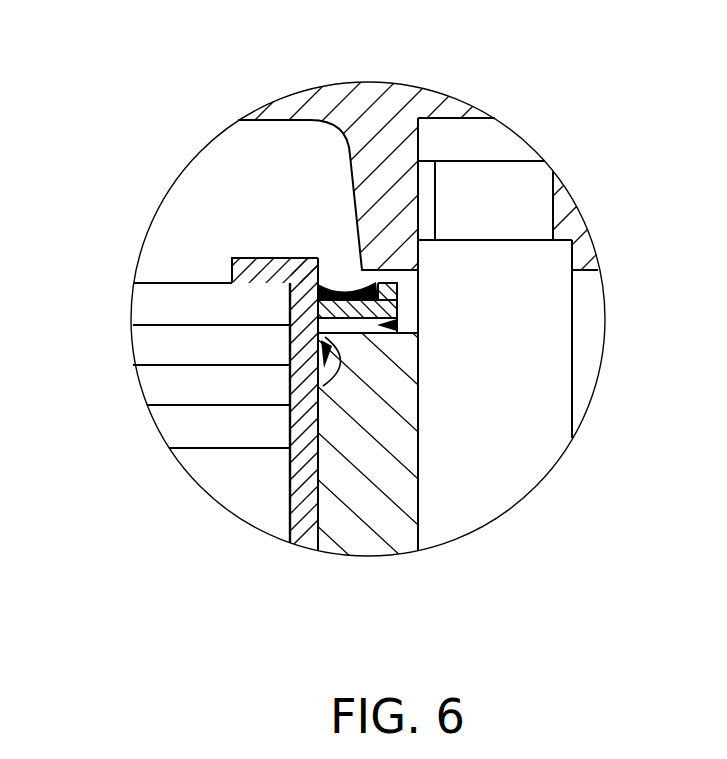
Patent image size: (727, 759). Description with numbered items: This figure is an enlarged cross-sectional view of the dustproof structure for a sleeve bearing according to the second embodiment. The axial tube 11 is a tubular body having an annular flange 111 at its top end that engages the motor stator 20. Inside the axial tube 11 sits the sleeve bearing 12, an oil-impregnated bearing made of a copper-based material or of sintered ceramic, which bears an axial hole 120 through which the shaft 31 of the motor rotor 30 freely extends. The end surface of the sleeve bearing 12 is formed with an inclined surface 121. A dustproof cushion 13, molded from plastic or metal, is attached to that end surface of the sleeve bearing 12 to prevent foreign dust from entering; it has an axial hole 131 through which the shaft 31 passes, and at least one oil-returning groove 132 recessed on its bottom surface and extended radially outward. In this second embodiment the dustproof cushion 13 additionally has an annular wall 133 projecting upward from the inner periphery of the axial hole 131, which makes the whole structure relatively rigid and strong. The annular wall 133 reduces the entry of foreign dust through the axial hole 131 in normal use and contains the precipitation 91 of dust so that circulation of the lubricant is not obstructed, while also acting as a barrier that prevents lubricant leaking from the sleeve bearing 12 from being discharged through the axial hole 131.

The motor rotor 30 is at (312, 107).
The shaft 31 is at (523, 270).
The axial tube 11 is at (300, 513).
The annular flange 111 is at (233, 260).
The sleeve bearing 12 is at (385, 504).
The axial hole 120 is at (420, 420).
The inclined surface 121 is at (328, 378).
The dustproof cushion 13 is at (350, 288).
The axial hole 131 is at (397, 313).
The oil-returning groove 132 is at (335, 325).
The annular wall 133 is at (352, 282).
The motor stator 20 is at (183, 389).
The precipitation 91 is at (297, 262).